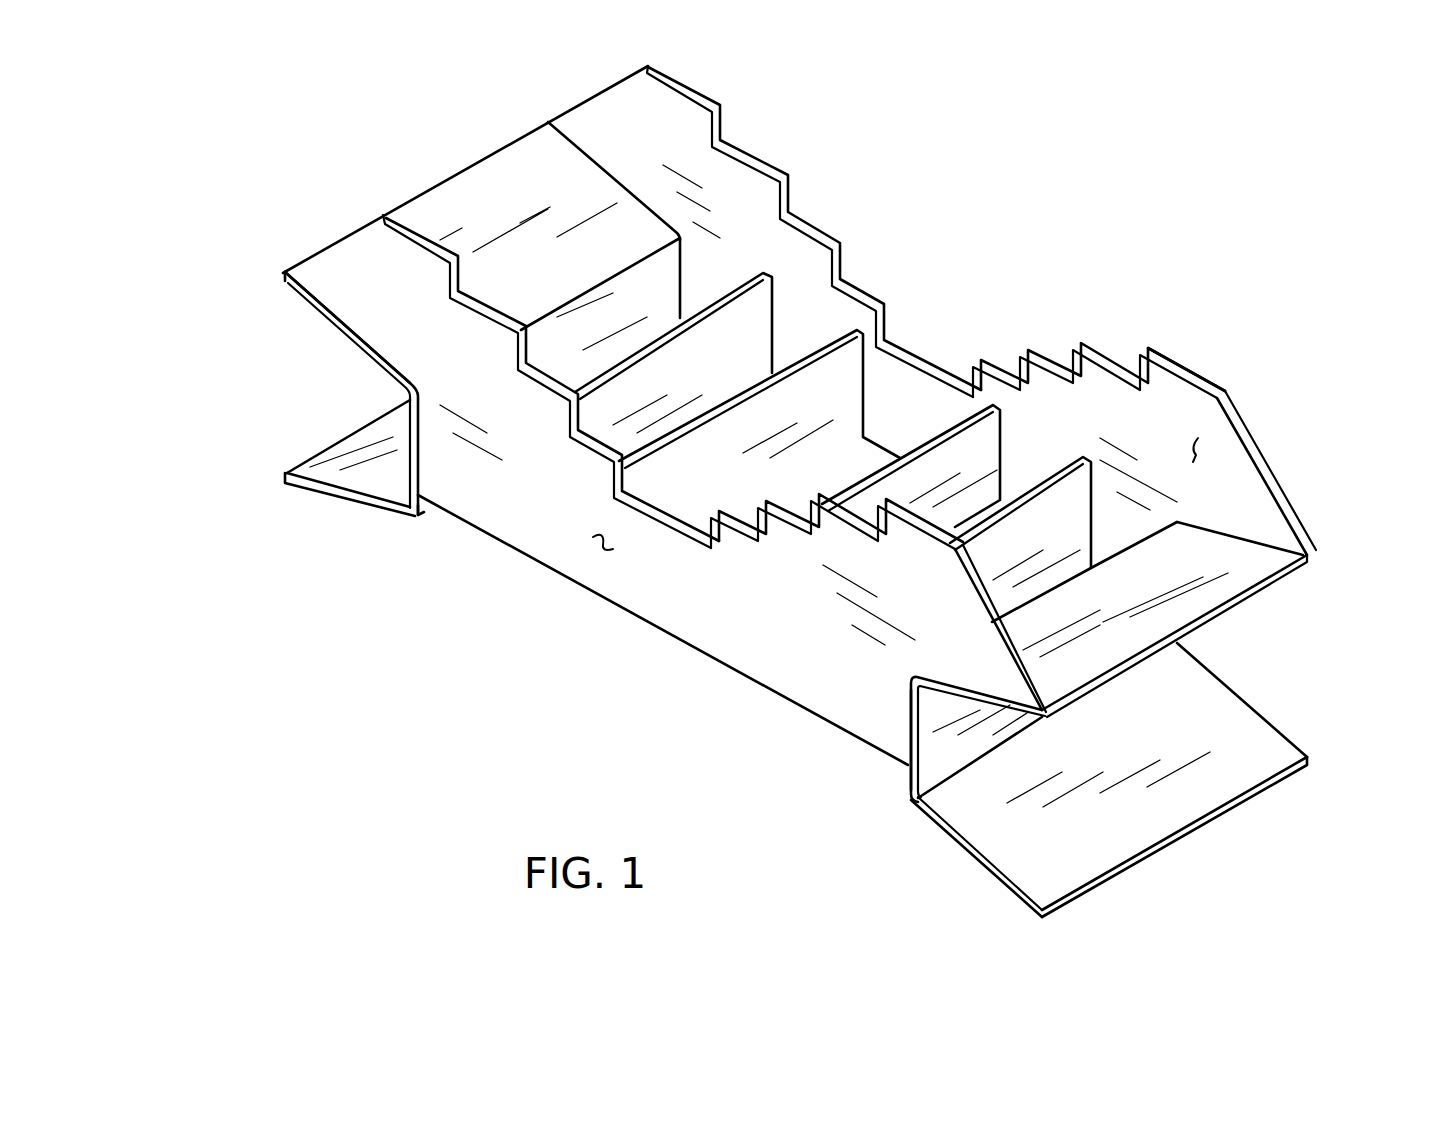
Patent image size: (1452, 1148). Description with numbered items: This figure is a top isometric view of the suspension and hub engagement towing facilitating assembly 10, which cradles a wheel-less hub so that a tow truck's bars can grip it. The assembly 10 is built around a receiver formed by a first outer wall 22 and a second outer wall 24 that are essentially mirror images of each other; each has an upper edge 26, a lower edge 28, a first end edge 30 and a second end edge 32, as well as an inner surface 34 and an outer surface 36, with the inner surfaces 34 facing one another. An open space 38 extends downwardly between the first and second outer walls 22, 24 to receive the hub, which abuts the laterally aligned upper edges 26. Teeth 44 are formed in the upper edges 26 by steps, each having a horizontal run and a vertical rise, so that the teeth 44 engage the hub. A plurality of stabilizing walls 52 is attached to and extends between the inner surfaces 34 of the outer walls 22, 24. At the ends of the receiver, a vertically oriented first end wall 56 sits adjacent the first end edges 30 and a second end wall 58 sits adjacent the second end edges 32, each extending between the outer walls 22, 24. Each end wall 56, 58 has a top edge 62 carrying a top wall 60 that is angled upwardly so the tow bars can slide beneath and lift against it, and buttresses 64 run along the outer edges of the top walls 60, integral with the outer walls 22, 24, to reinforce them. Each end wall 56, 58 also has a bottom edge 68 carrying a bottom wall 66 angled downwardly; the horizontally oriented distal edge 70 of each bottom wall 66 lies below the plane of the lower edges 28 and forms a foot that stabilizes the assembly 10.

The suspension and hub engagement towing facilitating assembly 10 is at (1100, 155).
The first outer wall 22 is at (1240, 417).
The second outer wall 24 is at (983, 607).
The upper edge 26 is at (1180, 357).
The lower edge 28 is at (715, 658).
The first end edge 30 is at (420, 443).
The second end edge 32 is at (910, 733).
The inner surface 34 is at (1195, 450).
The outer surface 36 is at (593, 540).
The open space 38 is at (670, 112).
The teeth 44 is at (842, 245).
The stabilizing walls 52 is at (830, 392).
The first end wall 56 is at (387, 417).
The second end wall 58 is at (940, 750).
The top walls 60 is at (483, 200).
The top edge 62 is at (615, 272).
The buttresses 64 is at (313, 288).
The bottom walls 66 is at (320, 470).
The bottom edge 68 is at (420, 517).
The distal edge 70 is at (340, 440).